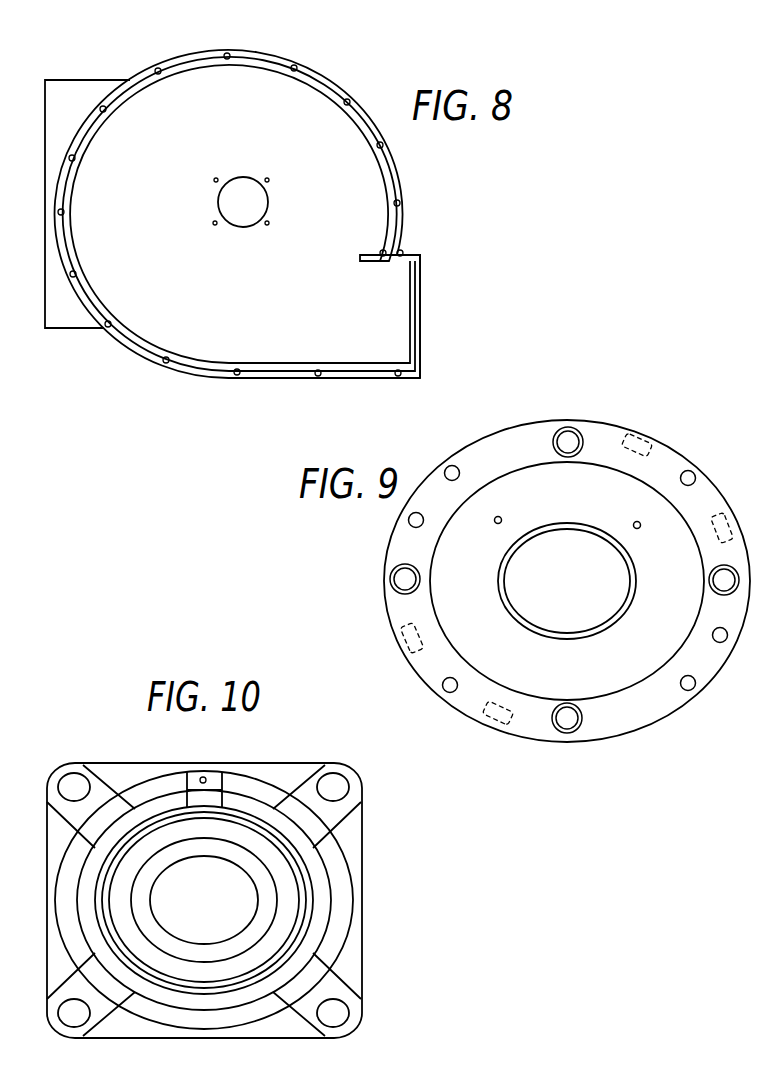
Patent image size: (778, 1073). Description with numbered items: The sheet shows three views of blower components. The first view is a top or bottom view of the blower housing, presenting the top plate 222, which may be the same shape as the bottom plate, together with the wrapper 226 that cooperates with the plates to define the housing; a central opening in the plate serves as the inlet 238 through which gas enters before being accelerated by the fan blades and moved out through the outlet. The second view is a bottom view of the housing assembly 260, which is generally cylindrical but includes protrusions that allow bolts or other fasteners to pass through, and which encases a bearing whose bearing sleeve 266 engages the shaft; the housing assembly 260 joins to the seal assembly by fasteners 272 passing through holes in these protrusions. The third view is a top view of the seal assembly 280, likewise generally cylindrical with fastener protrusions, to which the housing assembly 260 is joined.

In FIG. 8, the top plate 222 is at (268, 139).
In FIG. 8, the inlet 238 is at (252, 208).
In FIG. 8, the wrapper 226 is at (404, 212).
In FIG. 9, the housing assembly 260 is at (575, 421).
In FIG. 9, the bearing sleeve 266 is at (514, 611).
In FIG. 9, the fasteners 272 is at (575, 722).
In FIG. 10, the seal assembly 280 is at (252, 761).